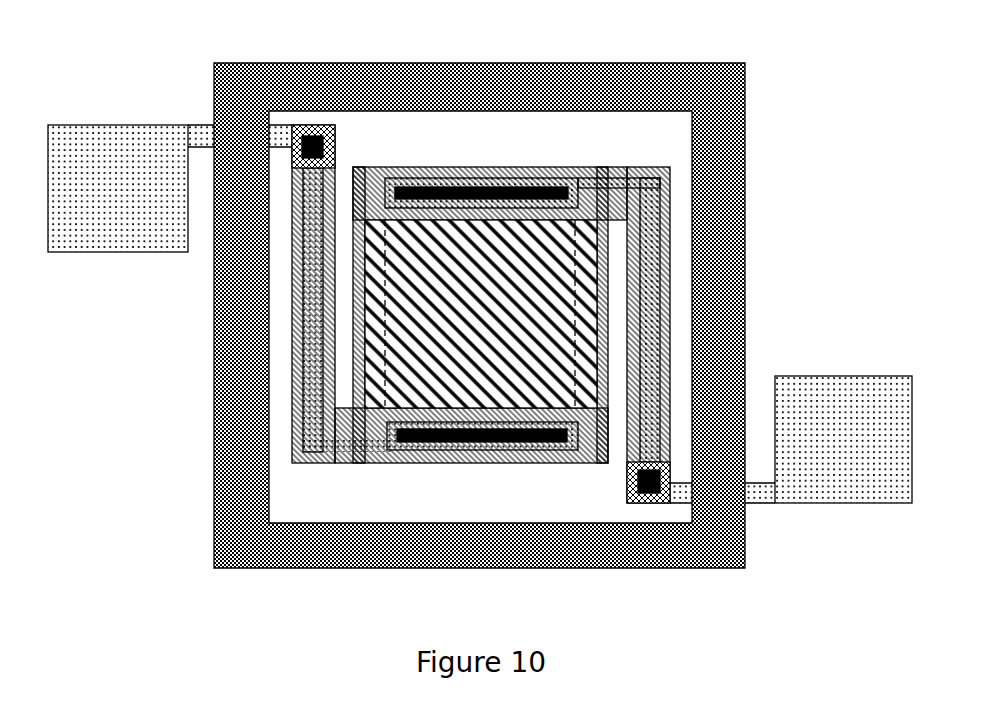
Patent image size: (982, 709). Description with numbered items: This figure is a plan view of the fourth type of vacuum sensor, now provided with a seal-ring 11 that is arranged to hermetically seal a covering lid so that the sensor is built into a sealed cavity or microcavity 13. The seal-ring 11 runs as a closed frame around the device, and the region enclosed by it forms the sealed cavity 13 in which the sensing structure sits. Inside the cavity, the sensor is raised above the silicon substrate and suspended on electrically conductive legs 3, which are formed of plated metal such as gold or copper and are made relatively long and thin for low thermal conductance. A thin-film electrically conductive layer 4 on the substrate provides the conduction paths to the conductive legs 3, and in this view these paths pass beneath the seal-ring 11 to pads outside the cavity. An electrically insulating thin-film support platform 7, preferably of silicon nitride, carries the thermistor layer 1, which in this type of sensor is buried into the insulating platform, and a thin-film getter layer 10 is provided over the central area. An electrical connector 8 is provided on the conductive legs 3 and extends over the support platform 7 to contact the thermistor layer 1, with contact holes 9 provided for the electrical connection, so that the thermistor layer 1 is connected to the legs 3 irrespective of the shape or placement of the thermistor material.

The thermistor layer 1 is at (388, 407).
The conductive legs 3 is at (327, 132).
The electrically conductive layer 4 is at (125, 230).
The support platform 7 is at (452, 168).
The electrical connector 8 is at (308, 363).
The contact holes 9 is at (408, 188).
The getter layer 10 is at (497, 238).
The seal-ring 11 is at (240, 483).
The sealed cavity 13 is at (312, 498).